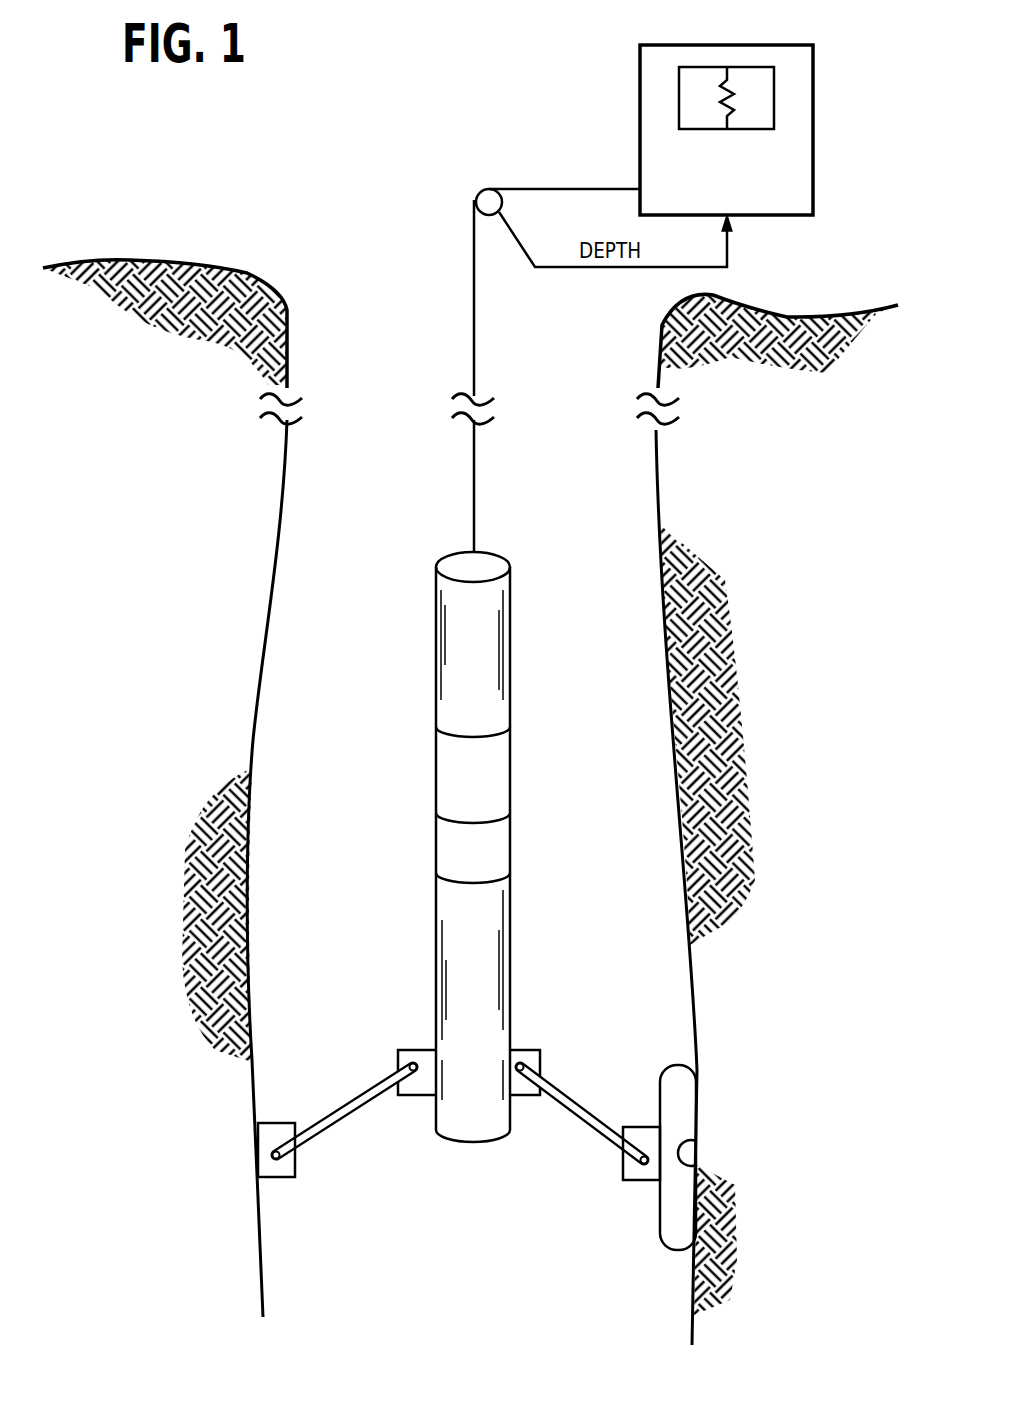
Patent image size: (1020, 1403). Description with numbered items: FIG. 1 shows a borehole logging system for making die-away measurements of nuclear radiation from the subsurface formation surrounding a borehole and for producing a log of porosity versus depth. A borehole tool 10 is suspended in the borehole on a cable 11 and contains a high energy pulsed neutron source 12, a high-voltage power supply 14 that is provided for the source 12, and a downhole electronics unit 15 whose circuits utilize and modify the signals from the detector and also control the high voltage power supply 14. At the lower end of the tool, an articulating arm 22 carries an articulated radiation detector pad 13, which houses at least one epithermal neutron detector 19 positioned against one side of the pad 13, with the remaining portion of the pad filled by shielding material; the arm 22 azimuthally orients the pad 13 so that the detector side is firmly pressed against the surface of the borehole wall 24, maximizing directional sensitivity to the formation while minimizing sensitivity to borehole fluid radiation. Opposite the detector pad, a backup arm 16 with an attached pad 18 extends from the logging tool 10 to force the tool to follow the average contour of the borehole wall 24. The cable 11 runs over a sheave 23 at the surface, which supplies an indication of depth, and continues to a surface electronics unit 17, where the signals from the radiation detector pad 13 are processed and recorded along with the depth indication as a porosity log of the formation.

The borehole tool 10 is at (504, 836).
The cable 11 is at (475, 480).
The high energy pulsed neutron source 12 is at (489, 866).
The articulated radiation detector pad 13 is at (683, 1090).
The high-voltage power supply 14 is at (489, 805).
The downhole electronics unit 15 is at (489, 696).
The backup arm 16 is at (350, 1100).
The surface electronics unit 17 is at (815, 160).
The pad 18 is at (283, 1178).
The epithermal neutron detector 19 is at (700, 1155).
The articulating arm 22 is at (560, 1088).
The sheave 23 is at (503, 205).
The borehole wall 24 is at (658, 470).